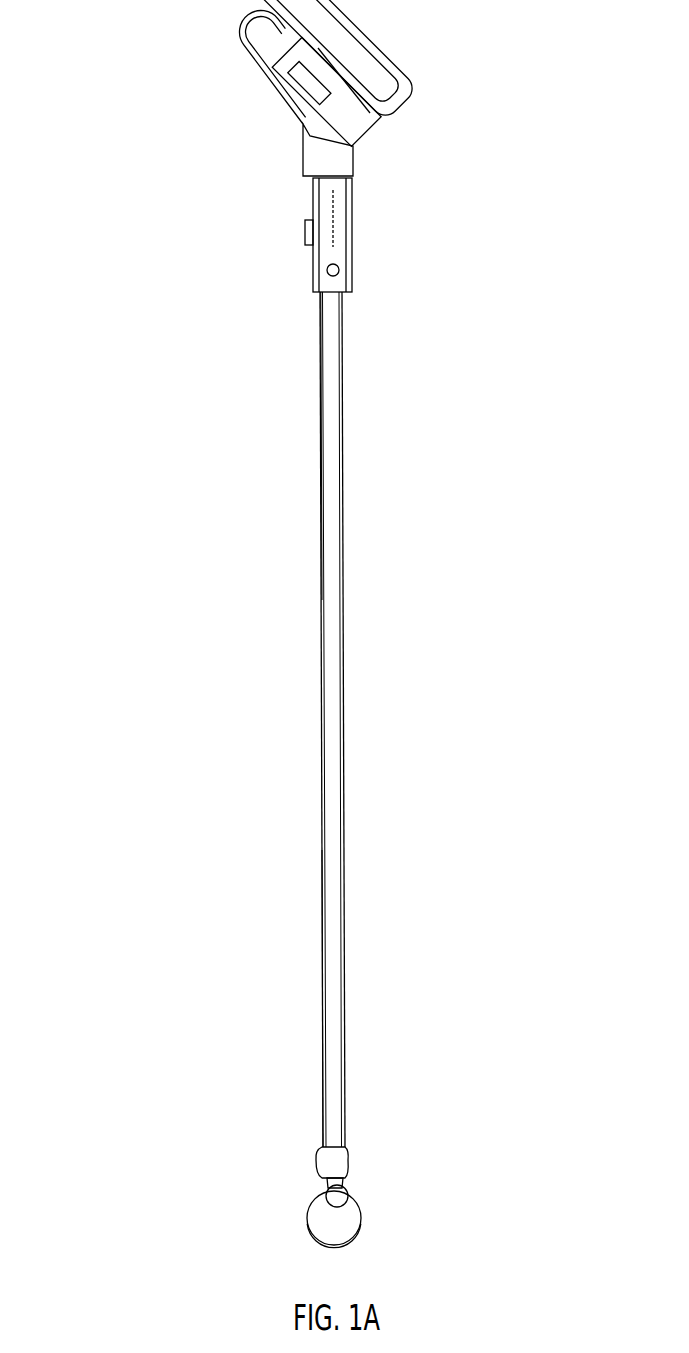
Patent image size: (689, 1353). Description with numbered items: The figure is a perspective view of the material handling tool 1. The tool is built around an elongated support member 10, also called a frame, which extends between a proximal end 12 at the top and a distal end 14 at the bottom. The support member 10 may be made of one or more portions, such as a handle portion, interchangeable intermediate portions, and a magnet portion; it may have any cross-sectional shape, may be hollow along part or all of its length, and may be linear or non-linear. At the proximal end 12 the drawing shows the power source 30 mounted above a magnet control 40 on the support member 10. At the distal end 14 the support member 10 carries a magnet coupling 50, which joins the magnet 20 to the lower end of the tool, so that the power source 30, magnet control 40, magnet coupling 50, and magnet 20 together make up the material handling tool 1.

The material handling tool 1 is at (217, 565).
The support member 10 is at (328, 782).
The proximal end 12 is at (312, 372).
The distal end 14 is at (272, 1077).
The magnet 20 is at (302, 1233).
The power source 30 is at (405, 90).
The magnet control 40 is at (307, 225).
The magnet coupling 50 is at (365, 1188).